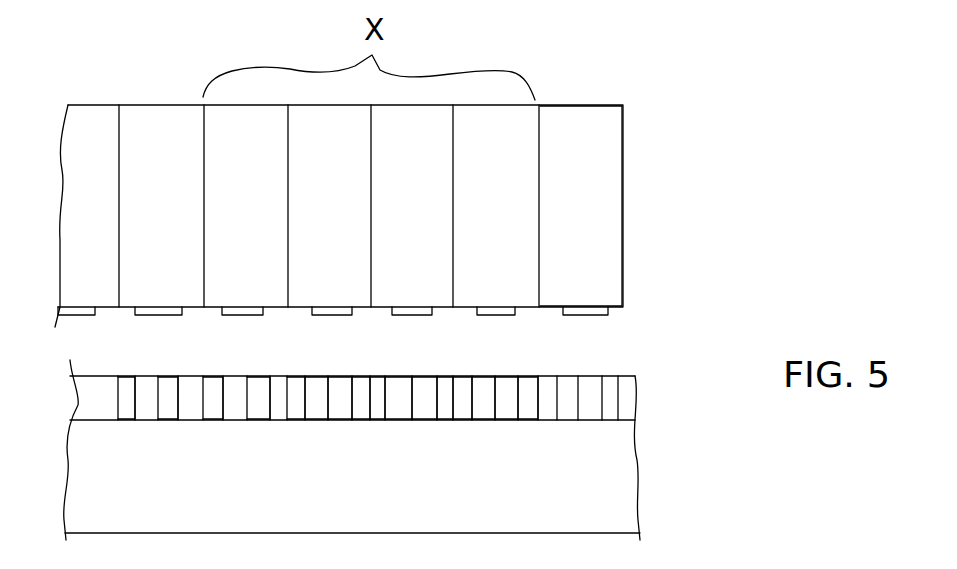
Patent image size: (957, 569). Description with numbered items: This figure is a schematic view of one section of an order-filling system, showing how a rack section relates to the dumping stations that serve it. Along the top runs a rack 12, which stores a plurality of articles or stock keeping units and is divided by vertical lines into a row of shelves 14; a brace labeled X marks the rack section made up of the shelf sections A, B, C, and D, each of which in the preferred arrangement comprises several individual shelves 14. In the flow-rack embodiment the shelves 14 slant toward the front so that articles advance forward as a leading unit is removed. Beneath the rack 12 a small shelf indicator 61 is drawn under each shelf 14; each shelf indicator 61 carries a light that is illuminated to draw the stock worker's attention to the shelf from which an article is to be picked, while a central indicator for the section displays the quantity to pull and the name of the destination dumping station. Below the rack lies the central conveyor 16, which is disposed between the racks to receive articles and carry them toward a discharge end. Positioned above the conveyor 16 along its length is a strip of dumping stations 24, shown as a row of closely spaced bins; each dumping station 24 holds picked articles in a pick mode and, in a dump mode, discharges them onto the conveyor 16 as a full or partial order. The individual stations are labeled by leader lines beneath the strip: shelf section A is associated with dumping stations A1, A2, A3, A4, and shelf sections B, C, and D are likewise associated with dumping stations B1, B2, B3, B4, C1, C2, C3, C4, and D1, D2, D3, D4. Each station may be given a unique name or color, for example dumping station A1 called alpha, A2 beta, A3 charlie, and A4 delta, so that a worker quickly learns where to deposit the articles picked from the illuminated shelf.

The rack 12 is at (640, 233).
The shelf 14 is at (605, 170).
The shelf indicator 61 is at (493, 319).
The central conveyor 16 is at (622, 481).
The dumping station 24 is at (612, 372).
The dumping station A1 is at (212, 412).
The dumping station A2 is at (234, 415).
The dumping station A3 is at (255, 414).
The dumping station A4 is at (273, 418).
The dumping station B1 is at (294, 418).
The dumping station B2 is at (316, 414).
The dumping station B3 is at (340, 414).
The dumping station B4 is at (360, 414).
The dumping station C1 is at (378, 414).
The dumping station C2 is at (398, 414).
The dumping station C3 is at (422, 414).
The dumping station C4 is at (442, 414).
The dumping station D1 is at (460, 414).
The dumping station D2 is at (482, 414).
The dumping station D3 is at (507, 414).
The dumping station D4 is at (527, 414).